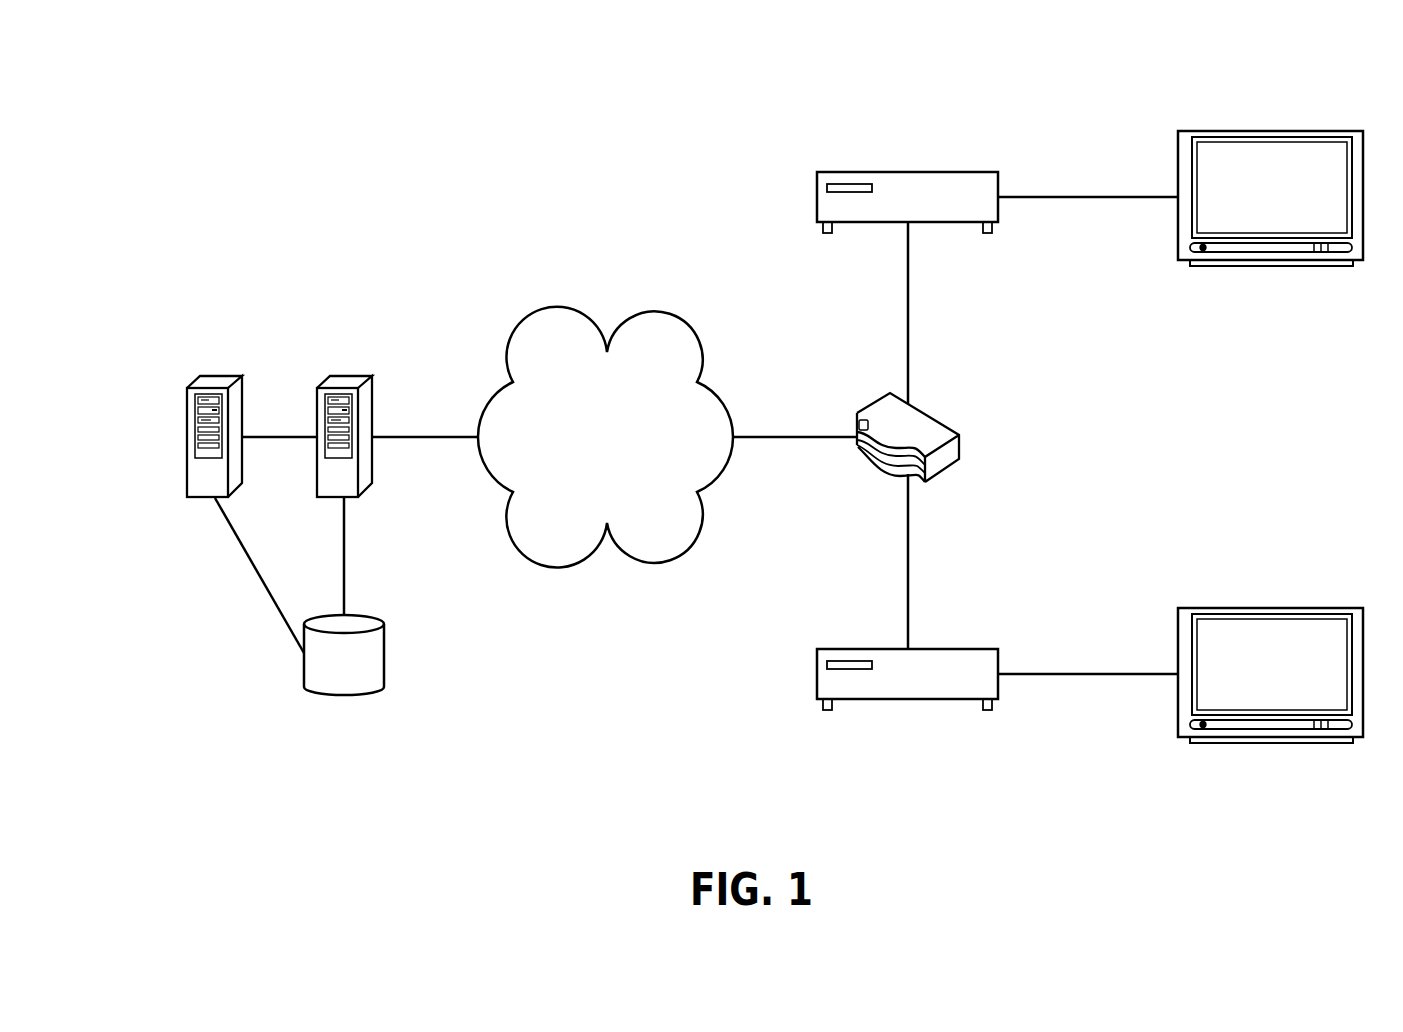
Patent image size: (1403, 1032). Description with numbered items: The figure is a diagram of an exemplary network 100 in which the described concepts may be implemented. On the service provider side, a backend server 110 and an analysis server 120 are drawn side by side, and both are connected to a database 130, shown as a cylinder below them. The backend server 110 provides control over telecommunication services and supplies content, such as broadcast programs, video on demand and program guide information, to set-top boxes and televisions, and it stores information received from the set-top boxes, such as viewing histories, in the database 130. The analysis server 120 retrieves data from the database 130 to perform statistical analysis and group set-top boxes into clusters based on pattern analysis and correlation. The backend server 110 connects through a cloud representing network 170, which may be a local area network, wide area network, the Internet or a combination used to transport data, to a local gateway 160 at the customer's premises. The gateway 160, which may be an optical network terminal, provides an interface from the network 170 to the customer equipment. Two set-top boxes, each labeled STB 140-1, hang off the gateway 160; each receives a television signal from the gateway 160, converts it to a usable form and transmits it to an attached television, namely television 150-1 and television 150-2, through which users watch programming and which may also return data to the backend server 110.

The network 100 is at (330, 97).
The backend server 110 is at (330, 377).
The analysis server 120 is at (200, 377).
The database 130 is at (384, 620).
The STB 140-1 is at (850, 172).
The television 150-1 is at (1178, 147).
The television 150-2 is at (1178, 624).
The local gateway 160 is at (933, 415).
The network 170 is at (587, 463).